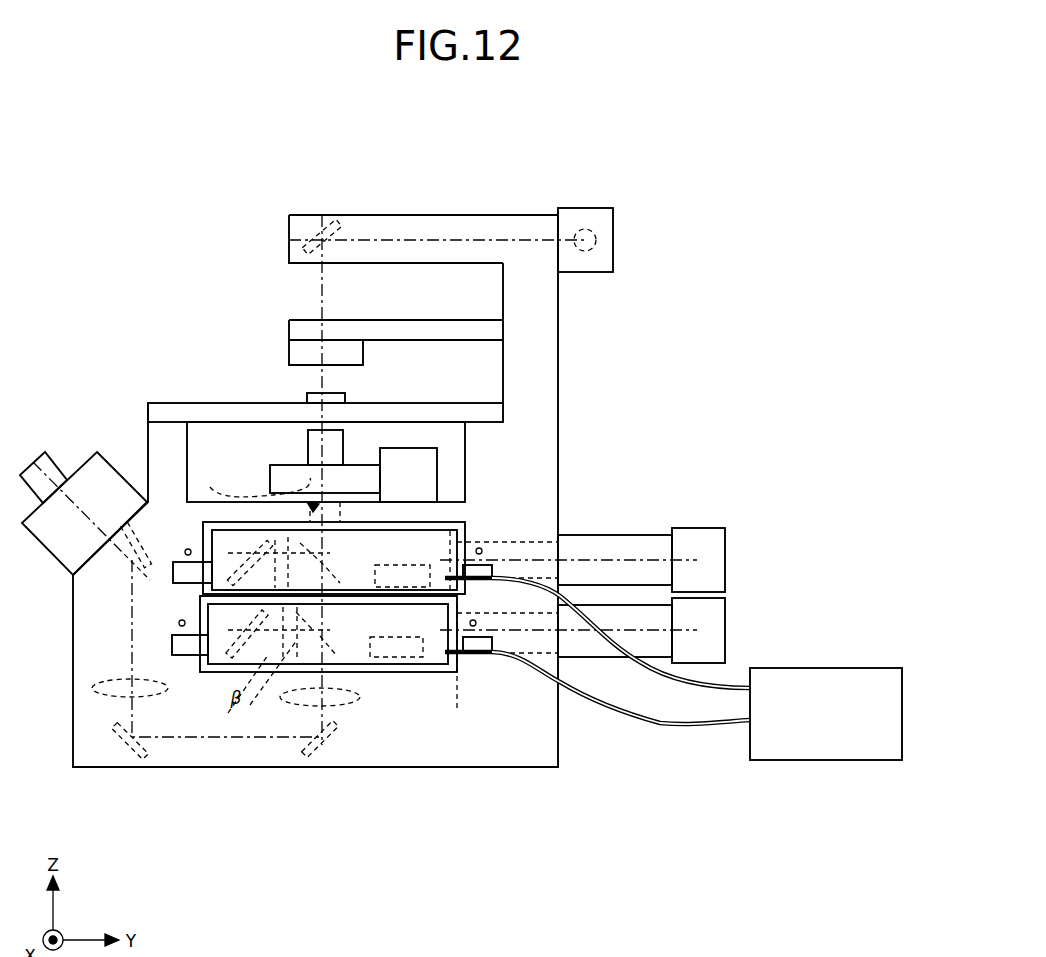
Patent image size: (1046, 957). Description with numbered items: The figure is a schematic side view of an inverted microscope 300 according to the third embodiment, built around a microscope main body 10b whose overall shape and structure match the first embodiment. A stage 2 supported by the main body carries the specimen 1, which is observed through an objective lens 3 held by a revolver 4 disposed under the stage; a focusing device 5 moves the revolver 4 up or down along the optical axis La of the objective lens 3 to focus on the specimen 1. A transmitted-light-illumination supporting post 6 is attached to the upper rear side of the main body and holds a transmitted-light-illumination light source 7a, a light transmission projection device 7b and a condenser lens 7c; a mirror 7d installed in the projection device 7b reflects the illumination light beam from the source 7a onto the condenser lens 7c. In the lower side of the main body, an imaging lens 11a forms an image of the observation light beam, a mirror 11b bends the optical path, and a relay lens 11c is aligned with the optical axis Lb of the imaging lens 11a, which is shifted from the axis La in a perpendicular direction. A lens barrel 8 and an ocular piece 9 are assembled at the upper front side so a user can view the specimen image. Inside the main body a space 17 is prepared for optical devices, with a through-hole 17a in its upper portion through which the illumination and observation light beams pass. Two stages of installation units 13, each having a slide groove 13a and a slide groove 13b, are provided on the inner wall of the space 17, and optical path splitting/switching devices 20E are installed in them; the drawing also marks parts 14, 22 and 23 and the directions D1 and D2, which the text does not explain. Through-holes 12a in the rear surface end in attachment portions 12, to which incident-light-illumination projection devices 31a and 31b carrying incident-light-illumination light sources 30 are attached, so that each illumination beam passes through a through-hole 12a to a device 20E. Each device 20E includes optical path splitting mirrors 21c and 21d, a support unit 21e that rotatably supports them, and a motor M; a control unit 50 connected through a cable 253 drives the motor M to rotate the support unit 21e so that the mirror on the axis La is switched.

The inverted microscope 300 is at (335, 131).
The specimen 1 is at (307, 396).
The stage 2 is at (173, 413).
The objective lens 3 is at (308, 440).
The revolver 4 is at (270, 470).
The focusing device 5 is at (420, 462).
The transmitted-light-illumination supporting post 6 is at (558, 320).
The transmitted-light-illumination light source 7a is at (613, 222).
The light transmission projection device 7b is at (425, 215).
The condenser lens 7c is at (289, 330).
The mirror 7d is at (320, 217).
The lens barrel 8 is at (43, 543).
The ocular piece 9 is at (63, 470).
The microscope main body 10b is at (72, 643).
The imaging lens 11a is at (357, 697).
The mirror 11b is at (128, 520).
The relay lens 11c is at (92, 688).
The attachment portion 12 is at (562, 545).
The through-hole 12a is at (558, 535).
The installation unit 13 is at (163, 577).
The slide groove 13a is at (483, 552).
The slide groove 13b is at (182, 562).
The fixing screw 14 is at (188, 549).
The space 17 is at (200, 668).
The through-hole 17a is at (253, 482).
The optical path splitting/switching device 20E is at (433, 533).
The optical path splitting mirror 21c is at (335, 548).
The optical path splitting mirror 21d is at (231, 631).
The support unit 21e is at (253, 667).
The coupling 22 is at (463, 568).
The protrusion 23 is at (185, 574).
The incident-light-illumination light source 30 is at (725, 543).
The incident-light-illumination projection device 31a is at (612, 541).
The incident-light-illumination projection device 31b is at (612, 621).
The control unit 50 is at (806, 668).
The cable 253 is at (705, 689).
The optical axis La is at (343, 437).
The optical axis Lb is at (322, 720).
The motor M is at (400, 611).
The direction D1 is at (454, 513).
The direction D2 is at (454, 606).